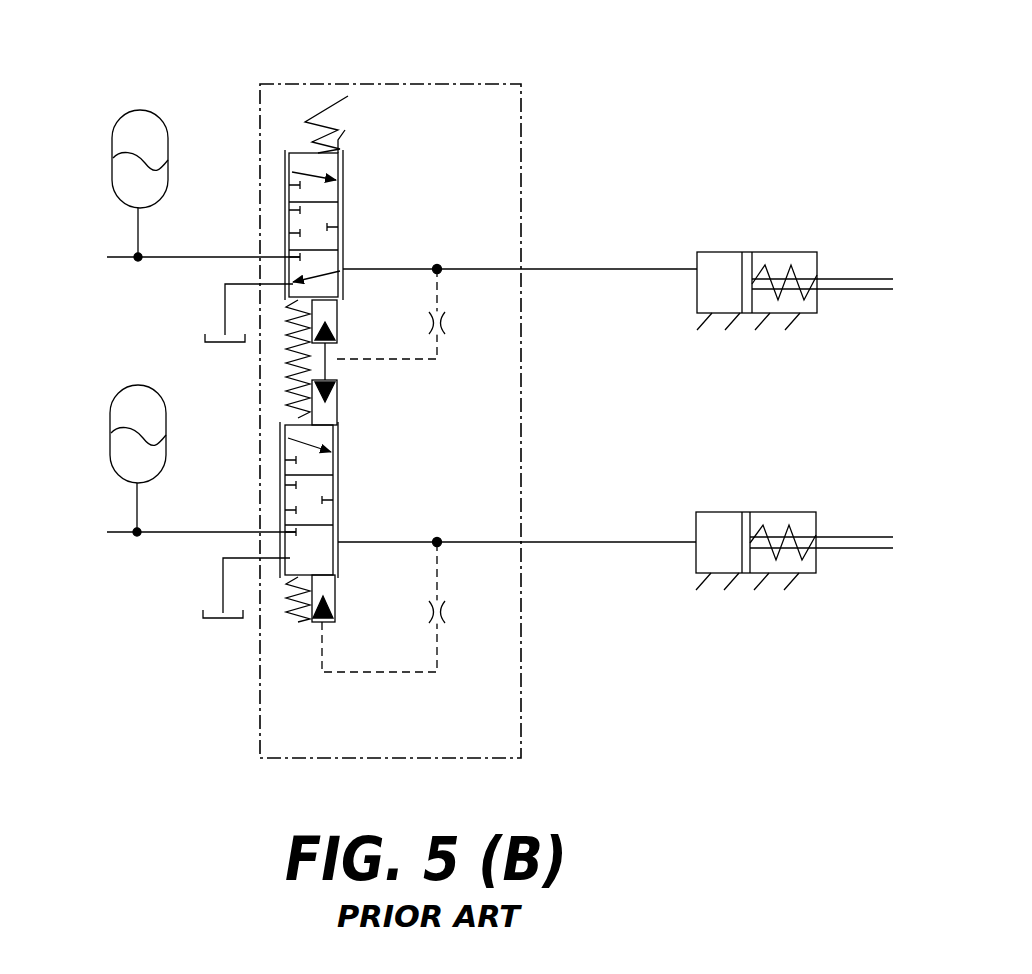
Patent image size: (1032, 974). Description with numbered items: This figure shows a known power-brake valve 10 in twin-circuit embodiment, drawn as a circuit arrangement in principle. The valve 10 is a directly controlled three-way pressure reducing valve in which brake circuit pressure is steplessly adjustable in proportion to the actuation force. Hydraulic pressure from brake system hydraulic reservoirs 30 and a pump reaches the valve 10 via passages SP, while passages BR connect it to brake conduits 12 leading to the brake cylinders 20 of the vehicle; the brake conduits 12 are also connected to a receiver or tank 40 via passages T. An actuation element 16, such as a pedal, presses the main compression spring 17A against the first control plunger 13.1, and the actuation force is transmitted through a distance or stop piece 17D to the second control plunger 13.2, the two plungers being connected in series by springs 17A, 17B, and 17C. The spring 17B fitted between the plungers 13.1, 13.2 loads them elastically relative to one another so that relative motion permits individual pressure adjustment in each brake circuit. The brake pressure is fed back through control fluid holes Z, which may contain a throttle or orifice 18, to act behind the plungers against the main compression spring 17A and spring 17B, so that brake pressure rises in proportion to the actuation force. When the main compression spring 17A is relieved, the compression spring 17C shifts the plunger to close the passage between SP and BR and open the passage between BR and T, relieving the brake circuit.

The brake valve 10 is at (530, 100).
The brake conduit 12 is at (633, 272).
The first control plunger 13.1 is at (287, 173).
The second control plunger 13.2 is at (291, 557).
The actuation element 16 is at (326, 108).
The main compression spring 17A is at (345, 130).
The spring 17B is at (285, 393).
The compression spring 17C is at (296, 628).
The distance or stop piece 17D is at (337, 380).
The throttle or orifice 18 is at (447, 323).
The brake cylinder 20 is at (794, 247).
The brake system hydraulic reservoir 30 is at (128, 110).
The receiver or tank 40 is at (197, 343).
The passage SP is at (262, 257).
The passage T is at (254, 284).
The passage BR is at (528, 268).
The control pressure hole or conduit Z is at (437, 357).